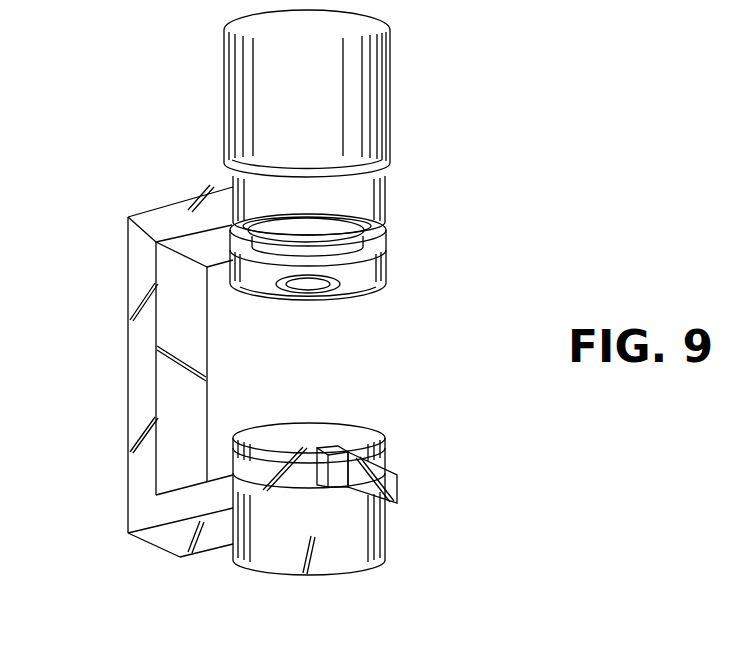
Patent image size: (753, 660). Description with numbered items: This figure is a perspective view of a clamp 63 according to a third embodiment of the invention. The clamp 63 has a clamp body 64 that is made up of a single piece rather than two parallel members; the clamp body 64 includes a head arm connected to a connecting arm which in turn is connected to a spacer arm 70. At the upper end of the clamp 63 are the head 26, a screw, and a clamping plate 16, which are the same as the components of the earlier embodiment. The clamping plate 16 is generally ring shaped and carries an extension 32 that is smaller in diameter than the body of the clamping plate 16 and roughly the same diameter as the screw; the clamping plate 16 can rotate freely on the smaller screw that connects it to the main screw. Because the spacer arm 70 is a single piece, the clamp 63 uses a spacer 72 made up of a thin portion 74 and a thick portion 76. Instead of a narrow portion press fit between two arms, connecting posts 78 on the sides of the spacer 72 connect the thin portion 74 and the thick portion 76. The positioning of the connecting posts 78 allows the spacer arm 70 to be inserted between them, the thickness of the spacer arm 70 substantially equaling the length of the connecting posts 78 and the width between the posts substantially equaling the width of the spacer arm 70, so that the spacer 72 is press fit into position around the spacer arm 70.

The clamp 63 is at (147, 77).
The head 26 is at (385, 187).
The extension 32 is at (368, 249).
The clamping plate 16 is at (385, 272).
The clamp body 64 is at (101, 342).
The spacer 72 is at (385, 528).
The thick portion 76 is at (338, 563).
The spacer arm 70 is at (398, 483).
The thin portion 74 is at (392, 447).
The connecting posts 78 is at (300, 468).